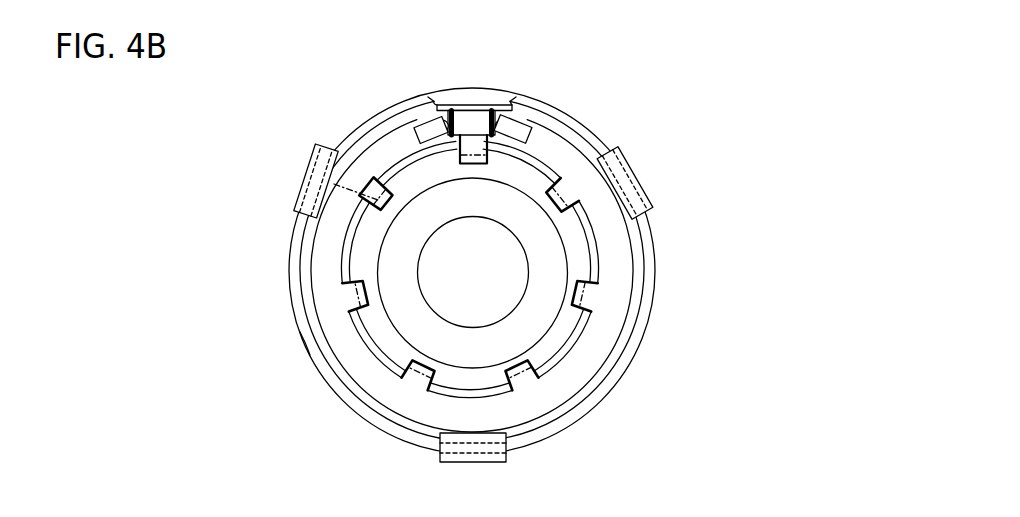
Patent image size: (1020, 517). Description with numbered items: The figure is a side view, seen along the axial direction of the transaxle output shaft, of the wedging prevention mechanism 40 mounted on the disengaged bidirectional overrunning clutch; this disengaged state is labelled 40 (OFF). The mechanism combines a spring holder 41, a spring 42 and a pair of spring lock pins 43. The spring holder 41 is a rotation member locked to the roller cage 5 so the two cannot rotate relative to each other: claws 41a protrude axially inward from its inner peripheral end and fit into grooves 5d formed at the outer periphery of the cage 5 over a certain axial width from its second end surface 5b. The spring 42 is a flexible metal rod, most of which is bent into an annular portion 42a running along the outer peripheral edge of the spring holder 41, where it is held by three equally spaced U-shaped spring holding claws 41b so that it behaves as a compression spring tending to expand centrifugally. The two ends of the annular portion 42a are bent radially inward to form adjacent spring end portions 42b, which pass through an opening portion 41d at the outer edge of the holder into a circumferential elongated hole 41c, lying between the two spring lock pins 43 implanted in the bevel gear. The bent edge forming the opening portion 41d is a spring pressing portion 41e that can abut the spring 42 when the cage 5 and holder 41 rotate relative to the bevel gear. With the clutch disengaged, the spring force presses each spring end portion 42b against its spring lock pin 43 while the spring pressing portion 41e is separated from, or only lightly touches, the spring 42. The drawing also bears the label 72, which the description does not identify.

The wedging prevention mechanism 40 is at (652, 94).
The spring holder 41 is at (652, 247).
The claws 41a is at (334, 184).
The spring holding claws 41b is at (312, 166).
The elongated hole 41c is at (528, 128).
The opening portion 41d is at (481, 104).
The spring pressing portion 41e is at (441, 103).
The spring 42 is at (656, 233).
The annular portion 42a is at (300, 332).
The spring end portions 42b is at (511, 104).
The spring lock pins 43 is at (432, 118).
The roller cage 5 is at (566, 176).
The second end surface 5b is at (400, 185).
The grooves 5d is at (366, 180).
The shaft (of motor 7) 72 is at (553, 255).